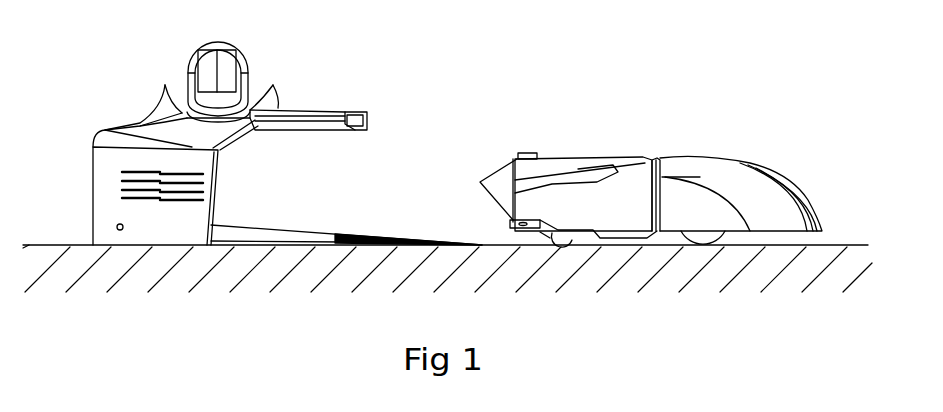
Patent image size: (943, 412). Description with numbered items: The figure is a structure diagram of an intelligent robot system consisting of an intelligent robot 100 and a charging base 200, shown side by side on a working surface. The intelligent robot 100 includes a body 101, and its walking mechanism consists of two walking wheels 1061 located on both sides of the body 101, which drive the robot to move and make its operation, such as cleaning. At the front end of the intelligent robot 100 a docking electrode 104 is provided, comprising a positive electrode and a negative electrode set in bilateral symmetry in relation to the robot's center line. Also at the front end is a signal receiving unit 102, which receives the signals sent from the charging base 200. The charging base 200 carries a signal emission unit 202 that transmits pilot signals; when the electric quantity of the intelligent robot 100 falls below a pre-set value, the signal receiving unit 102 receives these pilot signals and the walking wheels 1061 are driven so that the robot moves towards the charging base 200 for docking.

The intelligent robot 100 is at (629, 149).
The body 101 is at (547, 178).
The signal receiving unit 102 is at (600, 127).
The docking electrode 104 is at (517, 144).
The walking wheel 1061 is at (730, 178).
The charging base 200 is at (287, 141).
The signal emission unit 202 is at (325, 83).